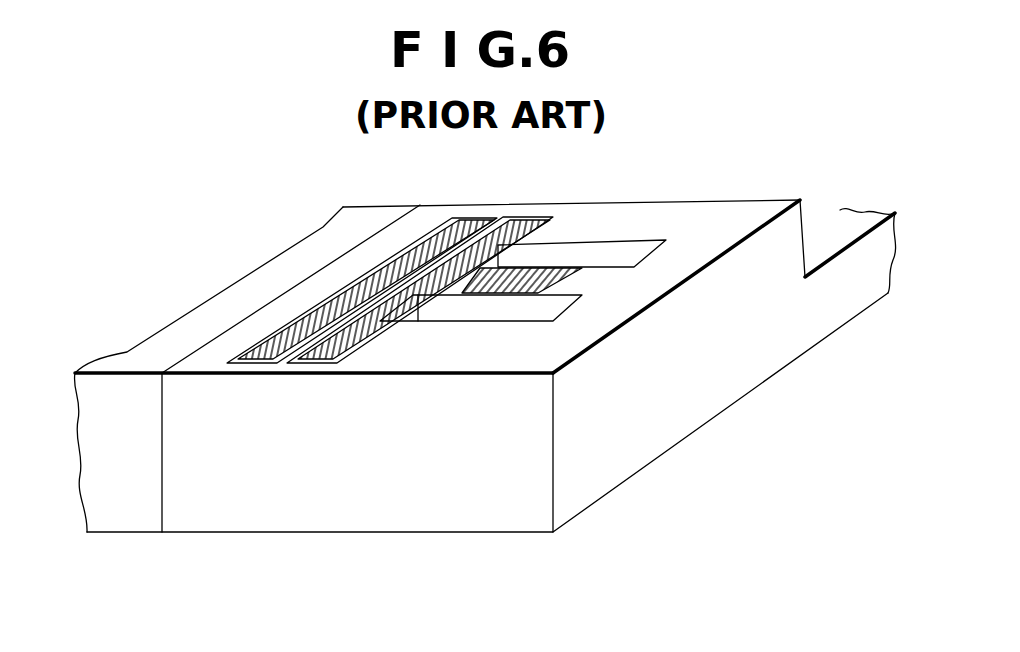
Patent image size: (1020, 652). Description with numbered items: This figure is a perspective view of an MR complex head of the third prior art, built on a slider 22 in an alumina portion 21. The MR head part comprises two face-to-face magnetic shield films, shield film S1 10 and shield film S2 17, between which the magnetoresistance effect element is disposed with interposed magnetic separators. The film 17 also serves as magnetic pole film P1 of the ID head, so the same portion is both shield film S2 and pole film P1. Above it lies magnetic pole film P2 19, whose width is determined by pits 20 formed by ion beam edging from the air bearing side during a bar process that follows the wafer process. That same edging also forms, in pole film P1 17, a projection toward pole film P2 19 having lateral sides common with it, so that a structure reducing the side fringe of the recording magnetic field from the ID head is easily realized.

The magnetic shield film S1 10 is at (460, 218).
The magnetic shield film S2 / magnetic pole film P1 17 is at (535, 220).
The magnetic pole film P2 19 is at (567, 268).
The pits 20 is at (590, 252).
The alumina portion 21 is at (387, 502).
The slider 22 is at (132, 510).